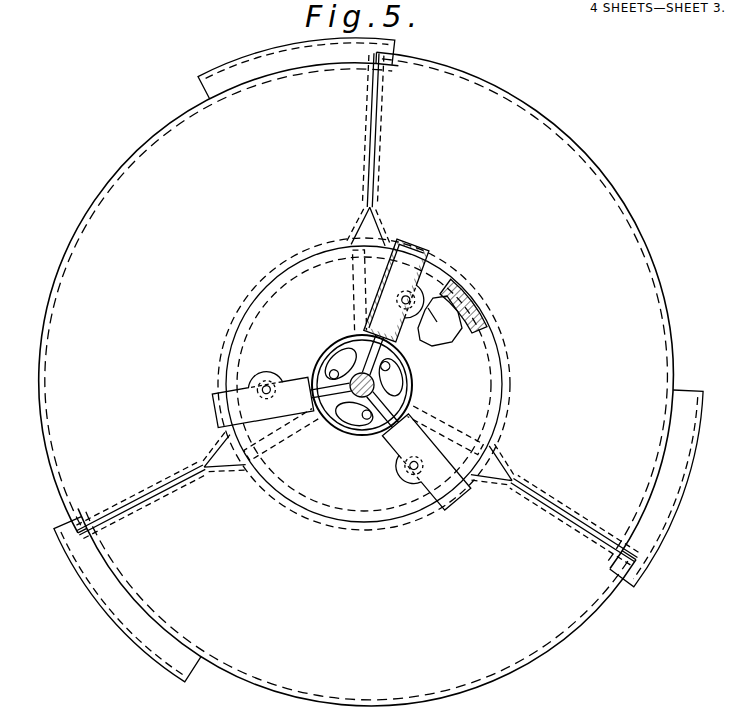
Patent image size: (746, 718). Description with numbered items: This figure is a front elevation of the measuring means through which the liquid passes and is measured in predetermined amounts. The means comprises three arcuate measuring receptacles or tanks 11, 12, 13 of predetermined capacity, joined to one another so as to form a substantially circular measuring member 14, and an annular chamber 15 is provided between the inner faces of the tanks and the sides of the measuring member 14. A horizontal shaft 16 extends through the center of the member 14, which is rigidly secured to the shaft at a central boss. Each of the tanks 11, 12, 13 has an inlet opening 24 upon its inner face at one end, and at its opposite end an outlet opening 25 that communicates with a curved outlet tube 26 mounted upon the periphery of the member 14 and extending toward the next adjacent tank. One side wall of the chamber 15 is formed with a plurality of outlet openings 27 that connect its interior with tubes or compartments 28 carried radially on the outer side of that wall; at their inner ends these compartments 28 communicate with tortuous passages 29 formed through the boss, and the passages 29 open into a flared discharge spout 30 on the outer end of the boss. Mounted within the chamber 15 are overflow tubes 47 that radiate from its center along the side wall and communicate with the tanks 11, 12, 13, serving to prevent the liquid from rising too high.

The measuring receptacle or tank 11 is at (357, 607).
The measuring receptacle or tank 12 is at (525, 310).
The measuring receptacle or tank 13 is at (219, 298).
The measuring member 14 is at (574, 124).
The annular chamber 15 is at (452, 312).
The horizontal shaft 16 is at (360, 338).
The inlet opening 24 is at (349, 242).
The outlet opening 25 is at (423, 57).
The curved outlet tube 26 is at (214, 88).
The outlet opening 27 is at (408, 296).
The tube or compartment 28 is at (405, 246).
The tortuous passage 29 is at (330, 370).
The flared discharge spout 30 is at (411, 390).
The overflow tube 47 is at (362, 284).